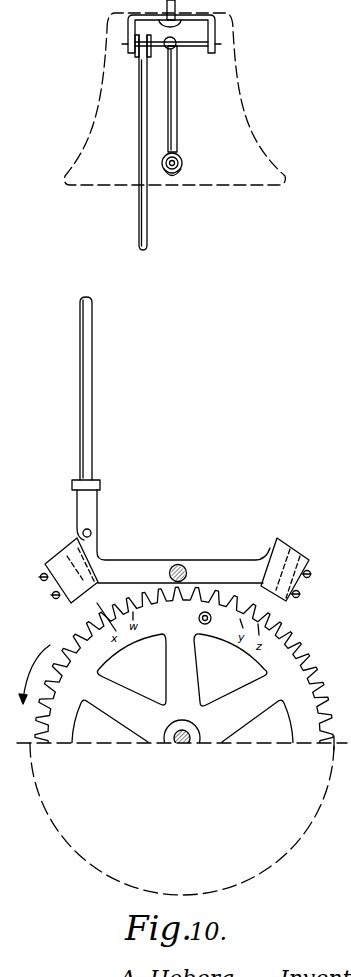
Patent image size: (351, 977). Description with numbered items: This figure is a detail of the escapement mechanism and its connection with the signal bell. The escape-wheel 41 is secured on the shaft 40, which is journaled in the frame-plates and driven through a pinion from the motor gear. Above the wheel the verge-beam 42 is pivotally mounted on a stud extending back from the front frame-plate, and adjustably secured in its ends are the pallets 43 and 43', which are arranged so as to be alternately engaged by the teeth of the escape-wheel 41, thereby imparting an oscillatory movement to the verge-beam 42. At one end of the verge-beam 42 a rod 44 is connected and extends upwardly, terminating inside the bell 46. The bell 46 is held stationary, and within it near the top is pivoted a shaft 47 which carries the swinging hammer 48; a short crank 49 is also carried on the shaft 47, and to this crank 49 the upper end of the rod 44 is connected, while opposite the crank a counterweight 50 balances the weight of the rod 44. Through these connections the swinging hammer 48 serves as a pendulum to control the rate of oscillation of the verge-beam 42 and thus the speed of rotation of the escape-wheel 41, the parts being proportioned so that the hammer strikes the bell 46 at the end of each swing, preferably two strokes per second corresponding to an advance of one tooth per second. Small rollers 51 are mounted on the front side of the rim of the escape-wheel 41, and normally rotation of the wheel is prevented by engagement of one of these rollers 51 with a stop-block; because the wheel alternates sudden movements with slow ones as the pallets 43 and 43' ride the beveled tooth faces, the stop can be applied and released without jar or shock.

The shaft 40 is at (191, 735).
The escape-wheel 41 is at (307, 673).
The verge-beam 42 is at (127, 567).
The pallet 43 is at (287, 582).
The pallet 43' is at (68, 586).
The rod 44 is at (138, 239).
The bell 46 is at (243, 93).
The shaft 47 is at (192, 47).
The swinging hammer 48 is at (177, 160).
The crank 49 is at (132, 47).
The counterweight 50 is at (173, 39).
The rollers 51 is at (205, 625).